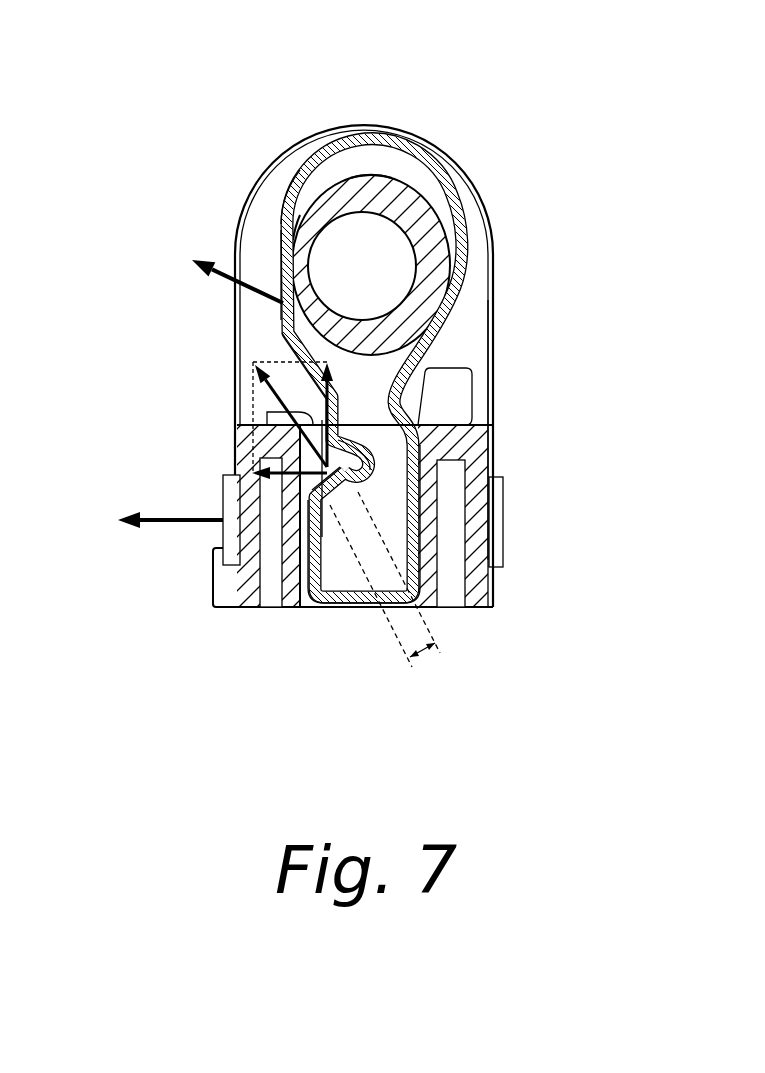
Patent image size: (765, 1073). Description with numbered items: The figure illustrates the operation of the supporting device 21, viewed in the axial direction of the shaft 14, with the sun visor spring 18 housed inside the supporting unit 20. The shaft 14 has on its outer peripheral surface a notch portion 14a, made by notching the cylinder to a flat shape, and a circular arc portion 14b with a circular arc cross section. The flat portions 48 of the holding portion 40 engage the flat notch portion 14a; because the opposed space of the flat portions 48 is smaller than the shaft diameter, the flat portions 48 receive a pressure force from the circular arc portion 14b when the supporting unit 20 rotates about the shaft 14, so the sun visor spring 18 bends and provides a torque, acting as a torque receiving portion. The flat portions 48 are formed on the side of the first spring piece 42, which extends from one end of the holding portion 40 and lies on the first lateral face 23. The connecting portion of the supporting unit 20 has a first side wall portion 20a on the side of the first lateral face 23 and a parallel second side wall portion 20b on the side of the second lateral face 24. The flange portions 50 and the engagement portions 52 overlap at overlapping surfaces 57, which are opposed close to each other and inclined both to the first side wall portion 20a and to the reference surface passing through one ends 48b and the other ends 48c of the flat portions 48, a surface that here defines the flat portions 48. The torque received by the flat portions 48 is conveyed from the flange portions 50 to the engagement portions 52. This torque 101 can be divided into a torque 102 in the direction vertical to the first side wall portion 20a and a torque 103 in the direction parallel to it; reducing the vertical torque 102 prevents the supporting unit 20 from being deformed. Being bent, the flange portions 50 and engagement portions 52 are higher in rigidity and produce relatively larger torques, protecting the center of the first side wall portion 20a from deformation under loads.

The shaft 14 is at (382, 187).
The notch portion 14a is at (300, 235).
The circular arc portion 14b is at (368, 170).
The sun visor spring 18 is at (422, 172).
The supporting unit 20 is at (238, 590).
The first side wall portion 20a is at (288, 540).
The second side wall portion 20b is at (427, 540).
The supporting device 21 is at (368, 657).
The first lateral face 23 is at (238, 440).
The second lateral face 24 is at (492, 453).
The holding portion 40 is at (463, 255).
The first spring piece 42 is at (305, 385).
The flat portions 48 is at (280, 247).
The one ends of the flat portions 48b is at (288, 343).
The other ends of the flat portions 48c is at (284, 190).
The flange portions 50 is at (372, 475).
The engagement portions 52 is at (328, 508).
The overlapping surfaces 57 is at (425, 650).
The torque 101 is at (325, 405).
The torque in the vertical direction 102 is at (253, 455).
The torque in the parallel direction 103 is at (340, 418).